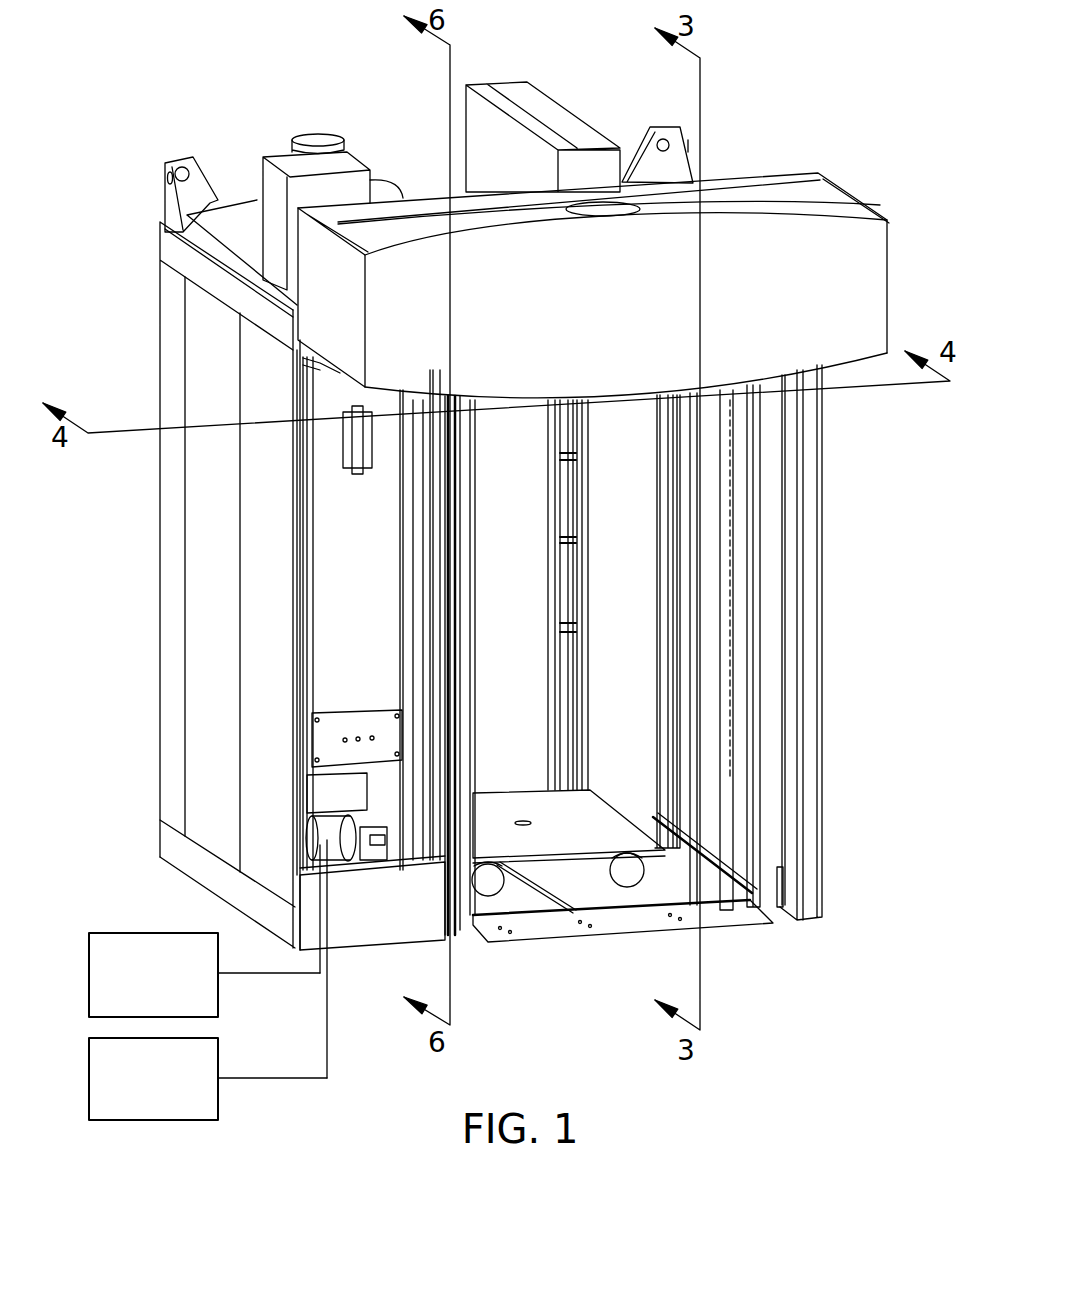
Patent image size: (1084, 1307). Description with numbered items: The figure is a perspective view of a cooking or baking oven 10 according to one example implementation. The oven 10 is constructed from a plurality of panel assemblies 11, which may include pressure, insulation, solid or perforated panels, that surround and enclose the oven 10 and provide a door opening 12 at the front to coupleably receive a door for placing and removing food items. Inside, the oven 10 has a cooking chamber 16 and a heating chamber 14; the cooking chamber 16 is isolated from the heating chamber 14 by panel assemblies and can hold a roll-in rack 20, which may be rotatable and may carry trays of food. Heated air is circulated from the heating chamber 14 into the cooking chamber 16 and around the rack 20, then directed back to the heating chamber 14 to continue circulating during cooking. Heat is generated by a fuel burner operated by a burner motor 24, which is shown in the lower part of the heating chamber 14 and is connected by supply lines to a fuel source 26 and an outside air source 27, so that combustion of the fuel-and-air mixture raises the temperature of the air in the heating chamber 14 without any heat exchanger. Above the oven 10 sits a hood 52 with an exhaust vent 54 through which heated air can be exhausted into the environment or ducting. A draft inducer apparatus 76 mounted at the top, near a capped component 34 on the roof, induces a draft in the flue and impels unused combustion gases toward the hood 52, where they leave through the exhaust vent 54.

The cooking or baking oven 10 is at (915, 518).
The panel assemblies 11 is at (150, 548).
The door opening 12 is at (708, 875).
The heating chamber 14 is at (212, 635).
The cooking chamber 16 is at (523, 742).
The roll-in rack 20 is at (583, 822).
The burner motor 24 is at (345, 845).
The fuel source 26 is at (165, 1122).
The outside air source 27 is at (150, 933).
The vent cap 34 is at (318, 133).
The hood 52 is at (885, 197).
The exhaust vent 54 is at (598, 208).
The draft inducer apparatus 76 is at (252, 163).